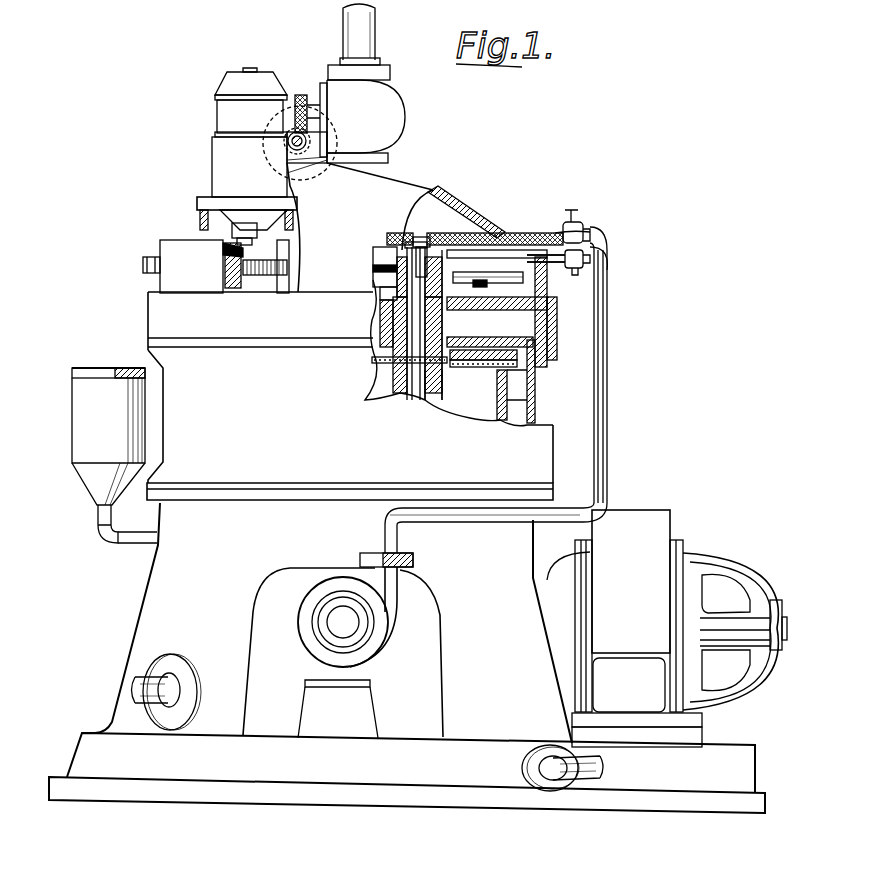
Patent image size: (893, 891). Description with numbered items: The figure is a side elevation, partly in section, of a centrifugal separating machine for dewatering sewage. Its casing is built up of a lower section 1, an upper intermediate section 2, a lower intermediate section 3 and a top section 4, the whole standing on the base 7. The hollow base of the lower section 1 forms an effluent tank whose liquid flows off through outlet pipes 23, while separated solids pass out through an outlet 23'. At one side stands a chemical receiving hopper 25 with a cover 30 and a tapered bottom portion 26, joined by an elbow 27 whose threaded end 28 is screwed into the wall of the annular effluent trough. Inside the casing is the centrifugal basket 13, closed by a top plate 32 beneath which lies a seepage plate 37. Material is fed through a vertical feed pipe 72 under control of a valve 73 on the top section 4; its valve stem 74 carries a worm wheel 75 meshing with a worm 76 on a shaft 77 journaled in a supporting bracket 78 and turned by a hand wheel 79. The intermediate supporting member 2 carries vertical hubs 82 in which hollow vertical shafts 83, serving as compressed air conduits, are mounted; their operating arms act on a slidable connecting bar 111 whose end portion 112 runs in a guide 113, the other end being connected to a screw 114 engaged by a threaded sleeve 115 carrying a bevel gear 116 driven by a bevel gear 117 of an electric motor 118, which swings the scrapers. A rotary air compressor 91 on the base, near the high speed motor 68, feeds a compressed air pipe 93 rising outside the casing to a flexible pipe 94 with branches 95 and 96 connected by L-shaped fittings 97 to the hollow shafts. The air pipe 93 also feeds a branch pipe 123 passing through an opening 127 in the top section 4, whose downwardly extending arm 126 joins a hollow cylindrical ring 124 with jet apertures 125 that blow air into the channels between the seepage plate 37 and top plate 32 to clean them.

The lower section 1 is at (336, 623).
The upper intermediate section 2 is at (260, 321).
The lower intermediate section 3 is at (350, 390).
The top section 4 is at (360, 226).
The base 7 is at (148, 606).
The centrifugal basket 13 is at (497, 408).
The outlet pipes 23 is at (159, 705).
The outlets 23' is at (562, 752).
The chemical receiving hopper 25 is at (108, 415).
The tapered bottom portion 26 is at (90, 483).
The elbow 27 is at (105, 535).
The threaded end 28 is at (150, 545).
The cover 30 is at (122, 370).
The top plate 32 is at (495, 352).
The seepage plate 37 is at (490, 368).
The high speed motor 68 is at (679, 628).
The vertical feed pipe 72 is at (370, 40).
The valve 73 is at (400, 115).
The valve stem 74 is at (323, 103).
The worm wheel 75 is at (300, 95).
The worm 76 is at (275, 147).
The shaft 77 is at (308, 141).
The supporting bracket 78 is at (320, 130).
The hand wheel 79 is at (275, 114).
The vertical hubs 82 is at (432, 392).
The vertical shafts 83 is at (378, 283).
The rotary air compressor 91 is at (378, 647).
The compressed air pipe 93 is at (607, 333).
The flexible pipe 94 is at (553, 232).
The branch 95 is at (465, 238).
The branch 96 is at (405, 227).
The L-shaped fittings 97 is at (425, 236).
The connecting bar 111 is at (385, 262).
The end portion 112 is at (488, 283).
The guide 113 is at (478, 290).
The screw 114 is at (290, 255).
The threaded sleeve 115 is at (245, 290).
The bevel gear 116 is at (228, 270).
The bevel gear 117 is at (230, 242).
The electric motor 118 is at (247, 156).
The branch pipe 123 is at (557, 258).
The hollow cylindrical ring 124 is at (372, 360).
The jet apertures 125 is at (372, 395).
The downwardly extending arm 126 is at (447, 320).
The opening 127 is at (493, 230).